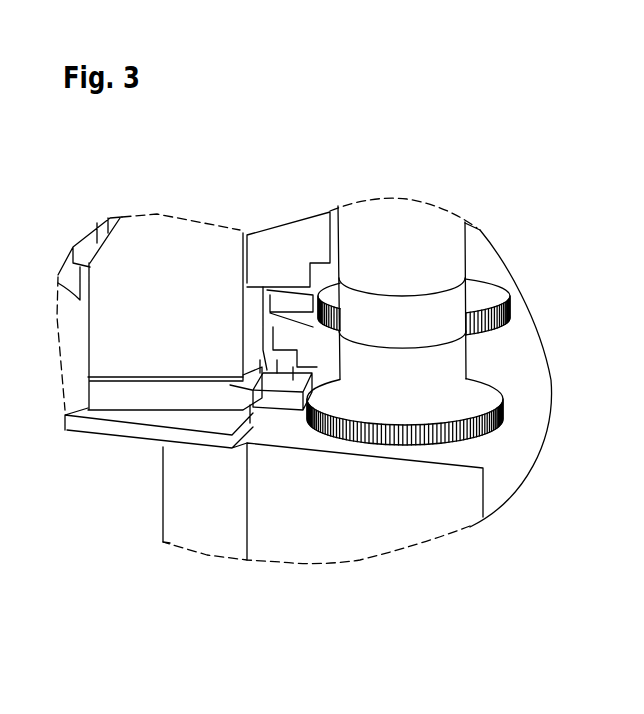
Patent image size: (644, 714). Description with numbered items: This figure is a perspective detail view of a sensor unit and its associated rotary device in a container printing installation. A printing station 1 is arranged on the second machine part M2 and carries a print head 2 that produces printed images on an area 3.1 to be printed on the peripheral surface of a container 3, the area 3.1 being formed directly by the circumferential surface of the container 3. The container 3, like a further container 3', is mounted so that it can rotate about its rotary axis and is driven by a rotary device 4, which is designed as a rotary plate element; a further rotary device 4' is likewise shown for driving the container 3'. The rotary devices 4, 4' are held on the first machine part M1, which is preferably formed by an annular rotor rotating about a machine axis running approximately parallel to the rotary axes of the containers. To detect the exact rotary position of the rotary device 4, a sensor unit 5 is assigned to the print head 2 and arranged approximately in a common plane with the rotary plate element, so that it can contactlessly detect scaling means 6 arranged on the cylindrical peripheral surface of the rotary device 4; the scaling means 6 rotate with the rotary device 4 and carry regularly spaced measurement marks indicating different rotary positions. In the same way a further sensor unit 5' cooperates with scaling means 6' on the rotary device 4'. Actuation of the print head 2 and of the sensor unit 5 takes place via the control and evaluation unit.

The printing station 1 is at (120, 342).
The print head 2 is at (263, 250).
The container 3 is at (467, 338).
The container 3' is at (456, 259).
The area to be printed 3.1 is at (350, 310).
The rotary device 4 is at (425, 458).
The rotary device 4' is at (457, 312).
The sensor unit 5 is at (266, 496).
The sensor unit 5' is at (298, 260).
The scaling means 6 is at (405, 517).
The scaling means 6' is at (468, 347).
The first machine part M1 is at (445, 502).
The second machine part M2 is at (172, 435).